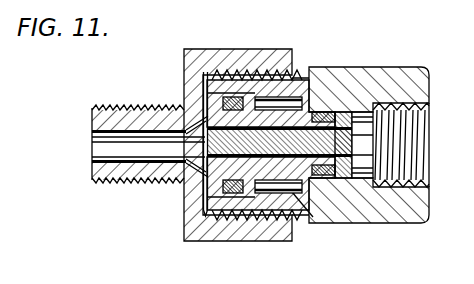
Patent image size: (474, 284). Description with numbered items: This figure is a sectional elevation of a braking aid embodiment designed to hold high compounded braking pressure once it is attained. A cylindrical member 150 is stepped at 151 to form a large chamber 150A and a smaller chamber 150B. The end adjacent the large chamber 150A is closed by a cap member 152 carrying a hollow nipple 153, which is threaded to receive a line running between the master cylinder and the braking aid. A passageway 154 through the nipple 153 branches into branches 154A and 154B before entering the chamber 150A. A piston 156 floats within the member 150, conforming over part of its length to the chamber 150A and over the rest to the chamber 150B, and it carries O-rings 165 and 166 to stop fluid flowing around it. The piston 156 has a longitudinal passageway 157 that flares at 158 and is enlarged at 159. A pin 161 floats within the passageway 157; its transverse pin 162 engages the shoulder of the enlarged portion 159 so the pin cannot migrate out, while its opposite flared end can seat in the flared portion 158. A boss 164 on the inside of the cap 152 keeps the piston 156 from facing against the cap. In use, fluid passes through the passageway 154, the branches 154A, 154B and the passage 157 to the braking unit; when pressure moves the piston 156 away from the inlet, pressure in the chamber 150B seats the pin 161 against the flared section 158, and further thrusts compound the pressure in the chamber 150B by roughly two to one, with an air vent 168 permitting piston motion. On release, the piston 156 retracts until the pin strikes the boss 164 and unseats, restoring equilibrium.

The cylindrical member 150 is at (400, 67).
The large portion or chamber 150A is at (270, 97).
The smaller portion or chamber 150B is at (376, 103).
The step 151 is at (300, 100).
The cap member 152 is at (222, 92).
The hollow nipple 153 is at (110, 106).
The passageway 154 is at (97, 157).
The branch 154A is at (183, 108).
The branch 154B is at (183, 176).
The piston 156 is at (305, 208).
The longitudinal passageway 157 is at (343, 176).
The flared portion 158 is at (352, 175).
The enlarged portion 159 is at (183, 222).
The pin 161 is at (270, 194).
The transverse pin 162 is at (233, 96).
The boss 164 is at (205, 75).
The O-ring 165 is at (233, 194).
The O-ring 166 is at (330, 112).
The air vent 168 is at (308, 215).